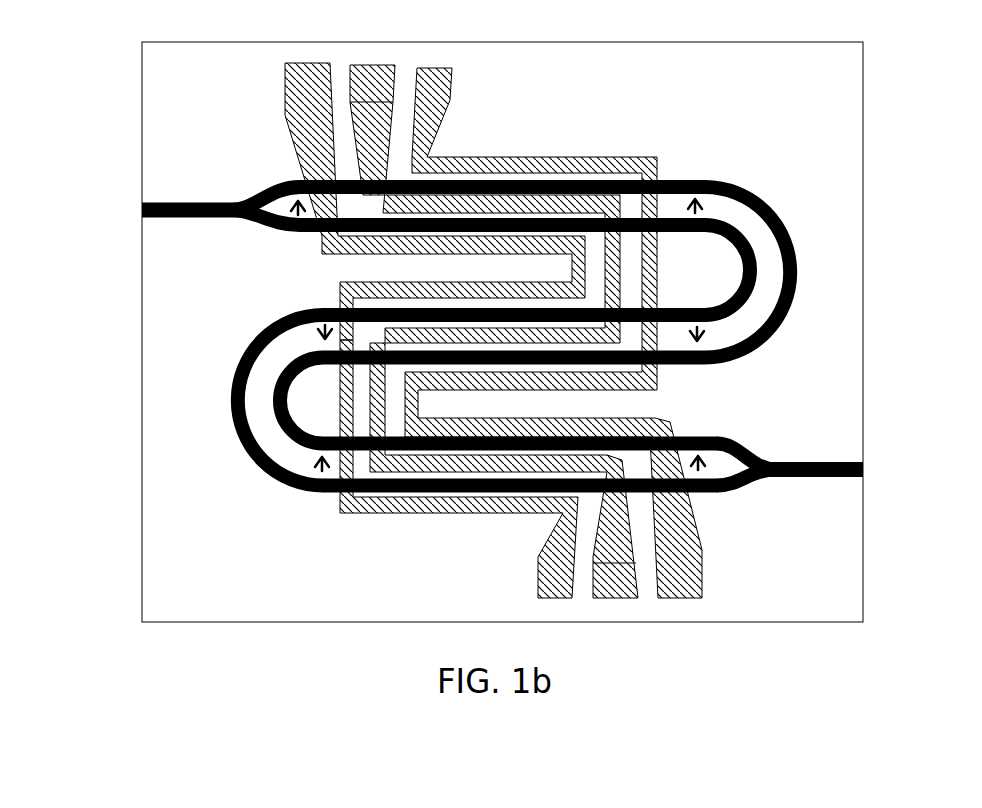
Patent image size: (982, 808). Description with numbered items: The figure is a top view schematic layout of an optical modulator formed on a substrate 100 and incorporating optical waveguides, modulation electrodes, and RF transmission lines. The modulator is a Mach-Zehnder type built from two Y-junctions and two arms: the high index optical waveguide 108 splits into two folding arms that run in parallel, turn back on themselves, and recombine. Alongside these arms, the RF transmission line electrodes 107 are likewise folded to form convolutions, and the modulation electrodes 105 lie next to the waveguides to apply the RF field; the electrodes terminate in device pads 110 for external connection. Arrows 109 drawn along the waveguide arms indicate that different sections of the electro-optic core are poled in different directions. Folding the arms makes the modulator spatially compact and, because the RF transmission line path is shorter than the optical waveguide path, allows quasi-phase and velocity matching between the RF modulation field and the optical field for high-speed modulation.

The substrate 100 is at (177, 495).
The modulation electrodes 105 is at (397, 520).
The RF transmission line electrodes 107 is at (335, 298).
The high index optical waveguide 108 is at (293, 182).
The arrows 109 is at (695, 340).
The device pads 110 is at (440, 97).